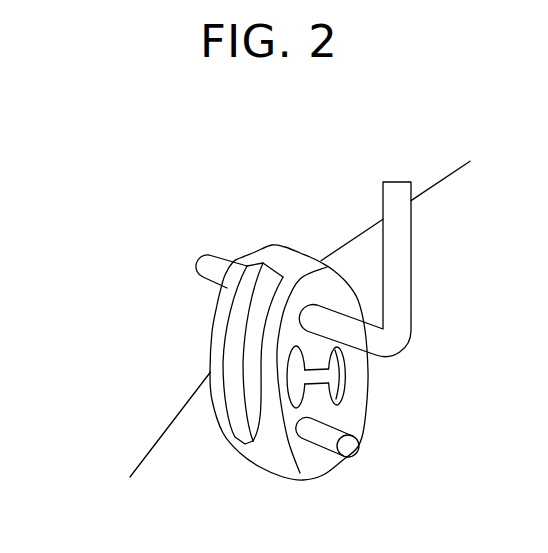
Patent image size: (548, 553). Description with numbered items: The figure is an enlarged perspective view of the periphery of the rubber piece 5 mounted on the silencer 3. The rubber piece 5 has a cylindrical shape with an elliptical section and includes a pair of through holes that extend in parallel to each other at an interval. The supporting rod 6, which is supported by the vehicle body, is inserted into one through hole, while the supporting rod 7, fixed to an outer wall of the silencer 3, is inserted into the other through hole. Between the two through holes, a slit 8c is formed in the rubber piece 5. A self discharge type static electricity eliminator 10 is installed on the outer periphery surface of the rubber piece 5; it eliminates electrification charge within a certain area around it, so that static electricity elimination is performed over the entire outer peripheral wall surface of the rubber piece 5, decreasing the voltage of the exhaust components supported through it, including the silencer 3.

The silencer 3 is at (172, 446).
The rubber piece 5 is at (293, 241).
The supporting rod 6 is at (397, 224).
The supporting rod 7 is at (350, 448).
The slit 8c is at (315, 378).
The self discharge type static electricity eliminator 10 is at (233, 344).